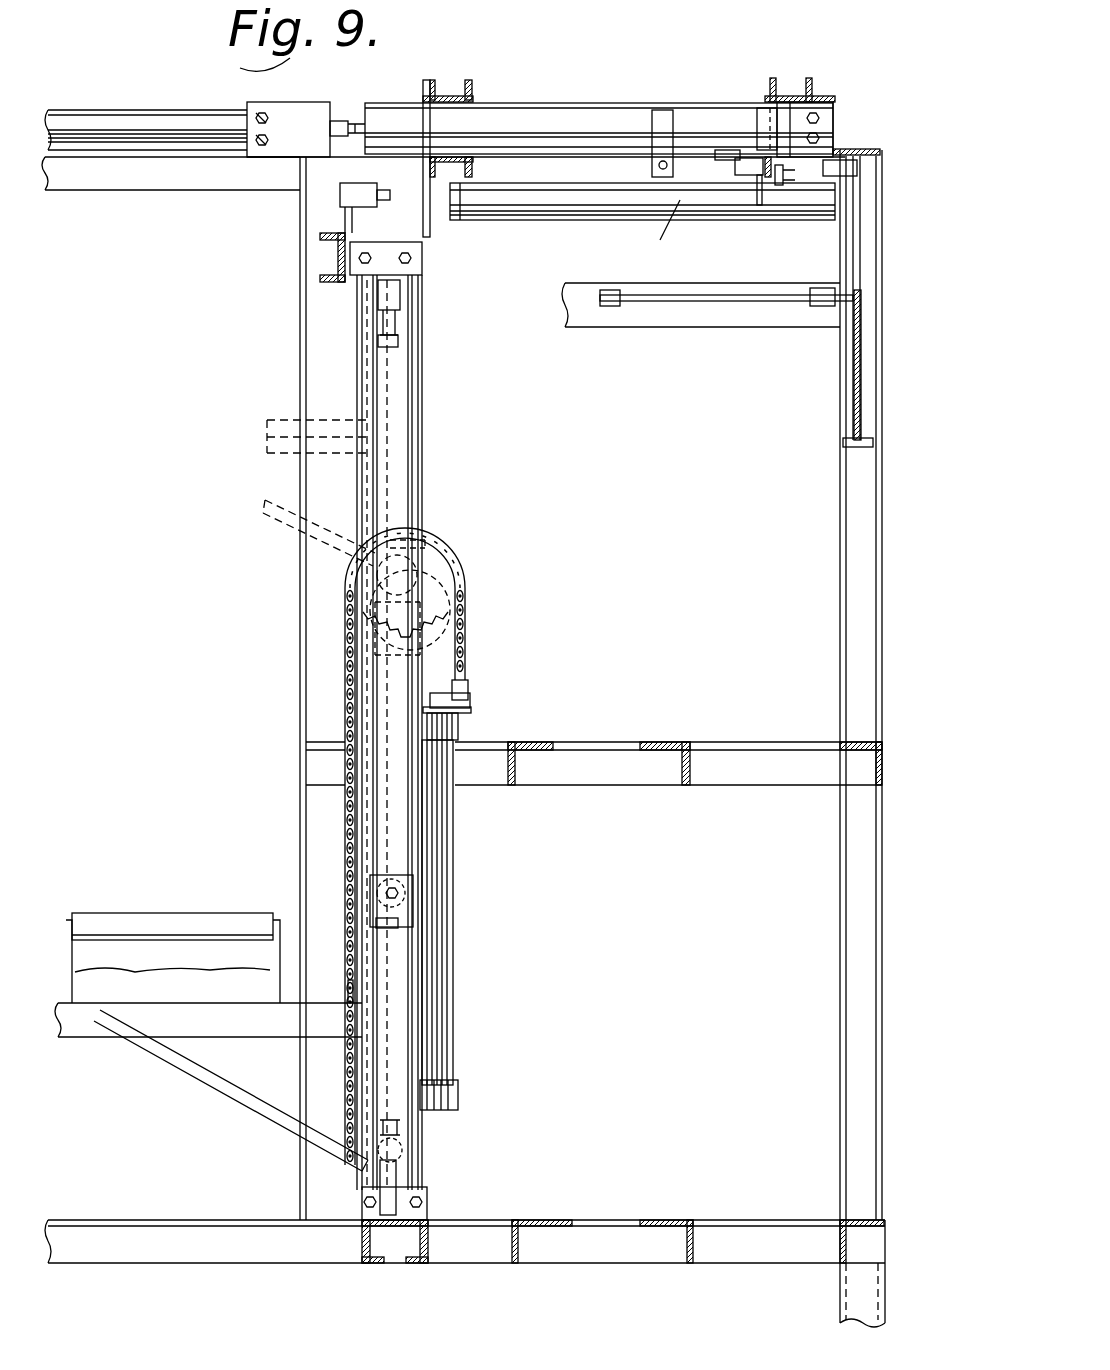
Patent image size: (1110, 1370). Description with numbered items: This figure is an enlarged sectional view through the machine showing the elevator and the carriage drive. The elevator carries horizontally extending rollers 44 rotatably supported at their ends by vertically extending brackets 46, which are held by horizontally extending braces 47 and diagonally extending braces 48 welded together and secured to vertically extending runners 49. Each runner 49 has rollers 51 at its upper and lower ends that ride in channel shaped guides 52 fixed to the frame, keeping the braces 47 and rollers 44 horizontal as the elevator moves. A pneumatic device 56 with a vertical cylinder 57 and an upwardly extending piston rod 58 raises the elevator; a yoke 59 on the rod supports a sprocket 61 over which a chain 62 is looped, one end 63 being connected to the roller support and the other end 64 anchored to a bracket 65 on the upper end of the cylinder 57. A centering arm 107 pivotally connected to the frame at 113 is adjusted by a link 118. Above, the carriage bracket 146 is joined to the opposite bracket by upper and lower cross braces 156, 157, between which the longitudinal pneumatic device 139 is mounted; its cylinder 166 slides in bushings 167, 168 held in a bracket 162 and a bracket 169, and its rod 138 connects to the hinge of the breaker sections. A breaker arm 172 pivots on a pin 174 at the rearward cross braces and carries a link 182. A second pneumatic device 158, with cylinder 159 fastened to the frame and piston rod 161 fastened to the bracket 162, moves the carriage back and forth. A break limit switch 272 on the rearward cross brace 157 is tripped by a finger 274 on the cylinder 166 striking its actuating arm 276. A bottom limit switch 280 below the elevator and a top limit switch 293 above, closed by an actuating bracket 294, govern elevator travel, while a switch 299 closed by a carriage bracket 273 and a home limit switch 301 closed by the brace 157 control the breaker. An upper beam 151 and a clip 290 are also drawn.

The rollers 44 is at (162, 915).
The brackets 46 is at (172, 970).
The horizontally extending braces 47 is at (92, 1028).
The diagonally extending braces 48 is at (238, 1078).
The runners 49 is at (425, 405).
The rollers 51 is at (410, 902).
The channel shaped guides 52 is at (430, 830).
The pneumatic device 56 is at (460, 1040).
The cylinder 57 is at (452, 1062).
The piston rod 58 is at (465, 690).
The yoke 59 is at (340, 615).
The sprocket 61 is at (440, 577).
The chain 62 is at (466, 640).
The end of chain 63 is at (346, 992).
The other end of chain 64 is at (470, 702).
The bracket 65 is at (462, 714).
The centering arm 107 is at (668, 312).
The pivotal connection 113 is at (852, 355).
The link 118 is at (733, 303).
The piston rod 138 is at (352, 120).
The pneumatic device 139 is at (562, 112).
The bracket 146 is at (310, 110).
The top beam 151 is at (123, 125).
The upper cross brace 156 is at (470, 90).
The lower cross brace 157 is at (473, 167).
The pneumatic device 158 is at (605, 222).
The cylinder 159 is at (533, 212).
The piston rod 161 is at (440, 230).
The bracket 162 is at (420, 212).
The cylinder 166 is at (612, 118).
The bushing 167 is at (420, 90).
The bushing 168 is at (790, 97).
The bracket 169 is at (758, 105).
The breaker arm 172 is at (753, 121).
The pin 174 is at (832, 107).
The link 182 is at (797, 176).
The break limit switch 272 is at (750, 178).
The bracket 273 is at (762, 182).
The finger 274 is at (680, 195).
The actuating arm 276 is at (725, 150).
The bottom limit switch 280 is at (395, 1195).
The clip 290 is at (440, 530).
The top limit switch 293 is at (392, 305).
The actuating bracket 294 is at (392, 340).
The switch 299 is at (348, 206).
The home limit switch 301 is at (880, 157).